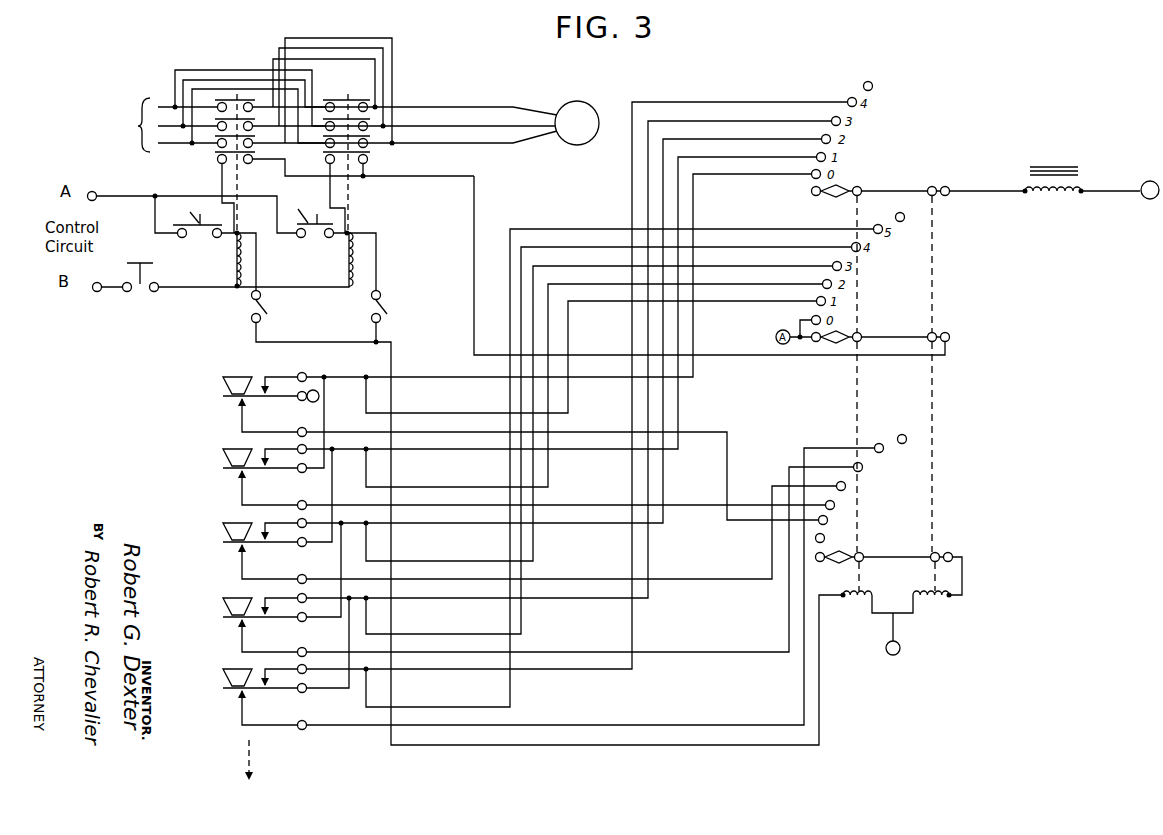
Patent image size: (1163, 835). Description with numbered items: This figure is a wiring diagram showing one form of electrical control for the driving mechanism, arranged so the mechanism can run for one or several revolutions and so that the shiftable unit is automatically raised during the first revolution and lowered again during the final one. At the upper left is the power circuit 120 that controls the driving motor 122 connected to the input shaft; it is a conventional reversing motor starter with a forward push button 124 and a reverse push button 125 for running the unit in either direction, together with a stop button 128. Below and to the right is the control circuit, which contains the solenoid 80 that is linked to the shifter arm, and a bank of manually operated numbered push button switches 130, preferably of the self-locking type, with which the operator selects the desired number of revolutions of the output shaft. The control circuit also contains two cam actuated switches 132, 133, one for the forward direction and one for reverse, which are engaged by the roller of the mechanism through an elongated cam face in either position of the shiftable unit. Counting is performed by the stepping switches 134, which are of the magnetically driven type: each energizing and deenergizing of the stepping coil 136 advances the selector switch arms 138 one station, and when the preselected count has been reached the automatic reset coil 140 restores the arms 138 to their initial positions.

The power circuit 120 is at (157, 78).
The driving motor 122 is at (598, 90).
The forward push button 124 is at (190, 214).
The reverse push button 125 is at (313, 210).
The stop button 128 is at (190, 277).
The numbered push button switches 130 is at (213, 490).
The cam actuated switch 132 is at (240, 316).
The cam actuated switch 133 is at (437, 318).
The stepping switches 134 is at (1043, 431).
The stepping coil 136 is at (868, 636).
The selector switch arms 138 is at (917, 180).
The automatic reset coil 140 is at (967, 636).
The solenoid 80 is at (1087, 180).